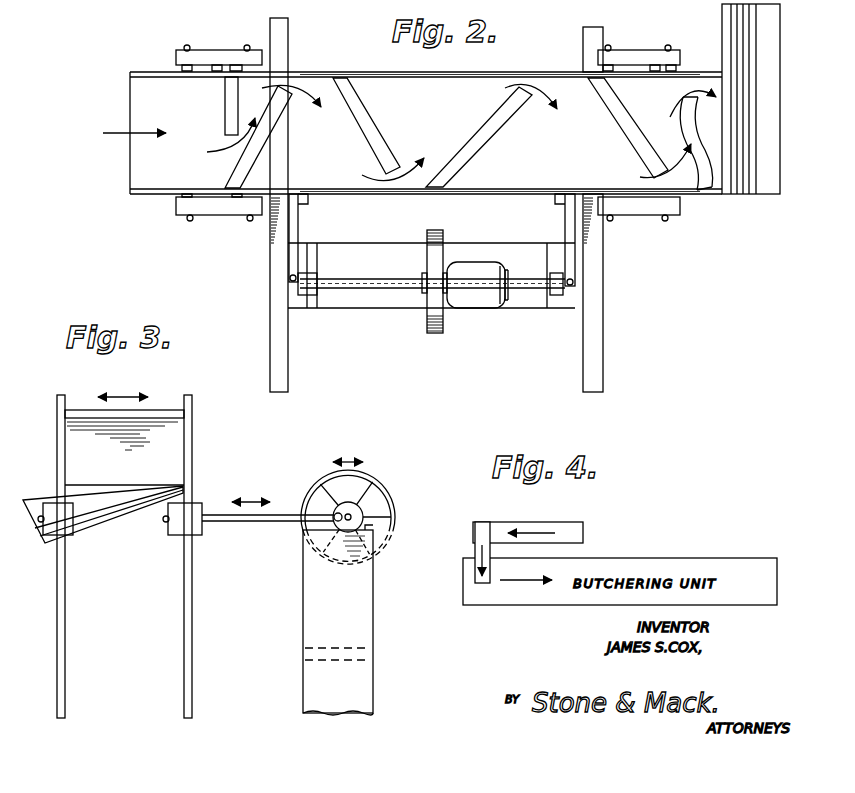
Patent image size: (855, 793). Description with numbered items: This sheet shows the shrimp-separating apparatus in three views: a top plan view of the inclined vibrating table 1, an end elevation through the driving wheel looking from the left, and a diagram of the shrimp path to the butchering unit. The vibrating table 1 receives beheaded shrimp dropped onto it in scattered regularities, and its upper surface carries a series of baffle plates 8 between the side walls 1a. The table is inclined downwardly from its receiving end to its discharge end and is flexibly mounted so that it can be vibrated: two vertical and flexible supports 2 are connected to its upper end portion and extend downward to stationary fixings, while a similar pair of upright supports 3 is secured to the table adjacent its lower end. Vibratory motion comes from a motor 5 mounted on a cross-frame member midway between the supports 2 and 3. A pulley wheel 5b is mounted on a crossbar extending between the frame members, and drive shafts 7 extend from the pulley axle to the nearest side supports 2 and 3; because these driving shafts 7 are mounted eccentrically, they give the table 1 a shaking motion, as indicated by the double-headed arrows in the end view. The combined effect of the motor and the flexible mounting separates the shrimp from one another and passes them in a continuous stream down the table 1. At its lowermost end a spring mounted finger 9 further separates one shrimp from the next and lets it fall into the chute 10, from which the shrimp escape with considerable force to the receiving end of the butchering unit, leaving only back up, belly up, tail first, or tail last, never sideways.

In FIG. 2, the vibrating table 1 is at (128, 93).
In FIG. 3, the vibrating table 1 is at (160, 412).
In FIG. 4, the vibrating table 1 is at (540, 522).
In FIG. 2, the channel side walls 1a is at (447, 67).
In FIG. 2, the vertical flexible supports 2 is at (226, 65).
In FIG. 3, the vertical flexible supports 2 is at (65, 595).
In FIG. 2, the upright supports 3 is at (655, 65).
In FIG. 2, the motor 5 is at (472, 301).
In FIG. 2, the pulley wheel 5b is at (441, 234).
In FIG. 3, the pulley wheel 5b is at (382, 490).
In FIG. 2, the drive shafts 7 is at (299, 222).
In FIG. 3, the drive shafts 7 is at (256, 524).
In FIG. 2, the baffle plates 8 is at (263, 147).
In FIG. 2, the spring mounted finger 9 is at (703, 128).
In FIG. 2, the chute 10 is at (765, 102).
In FIG. 4, the chute 10 is at (474, 548).